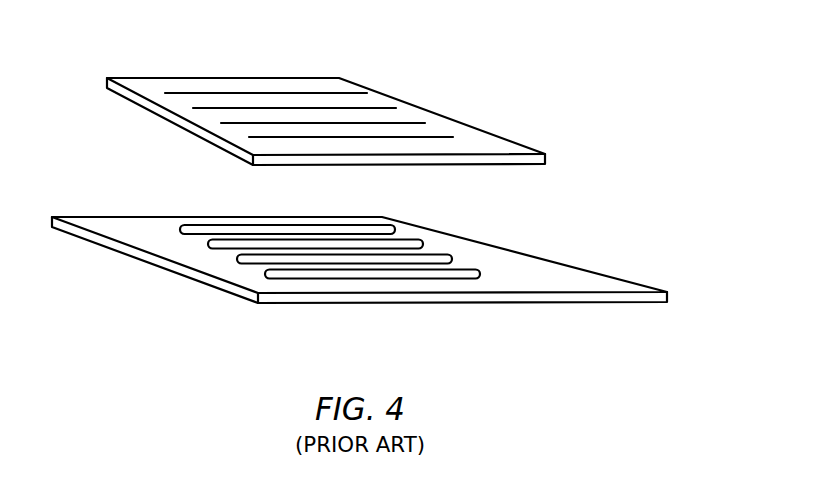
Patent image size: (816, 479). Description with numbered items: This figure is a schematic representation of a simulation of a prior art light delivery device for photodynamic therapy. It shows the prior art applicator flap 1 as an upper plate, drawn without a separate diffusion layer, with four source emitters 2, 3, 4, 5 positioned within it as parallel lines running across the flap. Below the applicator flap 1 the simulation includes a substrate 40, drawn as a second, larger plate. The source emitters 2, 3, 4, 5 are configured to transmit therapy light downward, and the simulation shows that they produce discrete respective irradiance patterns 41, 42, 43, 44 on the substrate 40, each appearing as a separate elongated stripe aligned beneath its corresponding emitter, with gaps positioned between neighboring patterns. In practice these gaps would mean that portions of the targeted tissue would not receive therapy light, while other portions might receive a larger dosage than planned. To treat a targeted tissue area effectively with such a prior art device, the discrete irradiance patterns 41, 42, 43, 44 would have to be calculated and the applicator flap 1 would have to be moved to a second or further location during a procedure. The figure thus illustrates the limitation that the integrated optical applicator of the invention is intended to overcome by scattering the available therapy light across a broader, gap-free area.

The applicator flap 1 is at (500, 147).
The source emitter 2 is at (242, 93).
The source emitter 3 is at (210, 108).
The source emitter 4 is at (402, 123).
The source emitter 5 is at (433, 137).
The substrate 40 is at (607, 283).
The irradiance pattern 41 is at (193, 225).
The irradiance pattern 42 is at (208, 244).
The irradiance pattern 43 is at (437, 254).
The irradiance pattern 44 is at (473, 270).